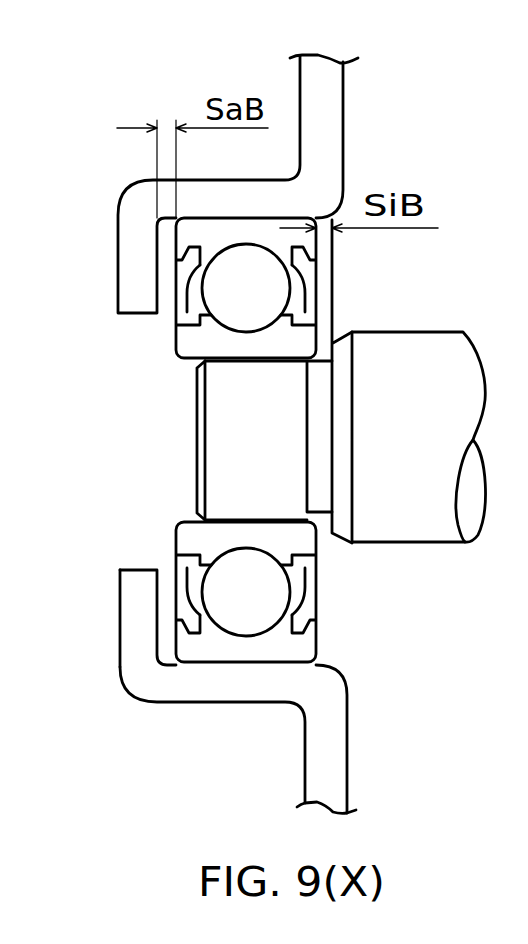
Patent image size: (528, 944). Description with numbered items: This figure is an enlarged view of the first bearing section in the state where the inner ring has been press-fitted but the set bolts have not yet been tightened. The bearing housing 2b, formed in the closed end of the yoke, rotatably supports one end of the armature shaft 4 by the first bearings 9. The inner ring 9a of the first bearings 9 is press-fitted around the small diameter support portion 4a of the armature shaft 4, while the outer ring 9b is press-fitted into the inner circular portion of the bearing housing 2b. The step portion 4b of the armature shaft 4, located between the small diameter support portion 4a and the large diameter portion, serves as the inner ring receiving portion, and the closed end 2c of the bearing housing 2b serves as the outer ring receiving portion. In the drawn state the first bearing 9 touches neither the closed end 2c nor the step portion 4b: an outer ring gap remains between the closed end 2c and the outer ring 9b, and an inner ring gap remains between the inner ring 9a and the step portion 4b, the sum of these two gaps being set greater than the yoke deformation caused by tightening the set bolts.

The bearing housing 2b is at (198, 690).
The closed end of the bearing housing 2c is at (137, 623).
The armature shaft 4 is at (420, 503).
The small diameter support portion 4a is at (235, 435).
The step portion 4b is at (328, 352).
The first bearings 9 is at (320, 603).
The inner ring 9a is at (200, 535).
The outer ring 9b is at (260, 648).